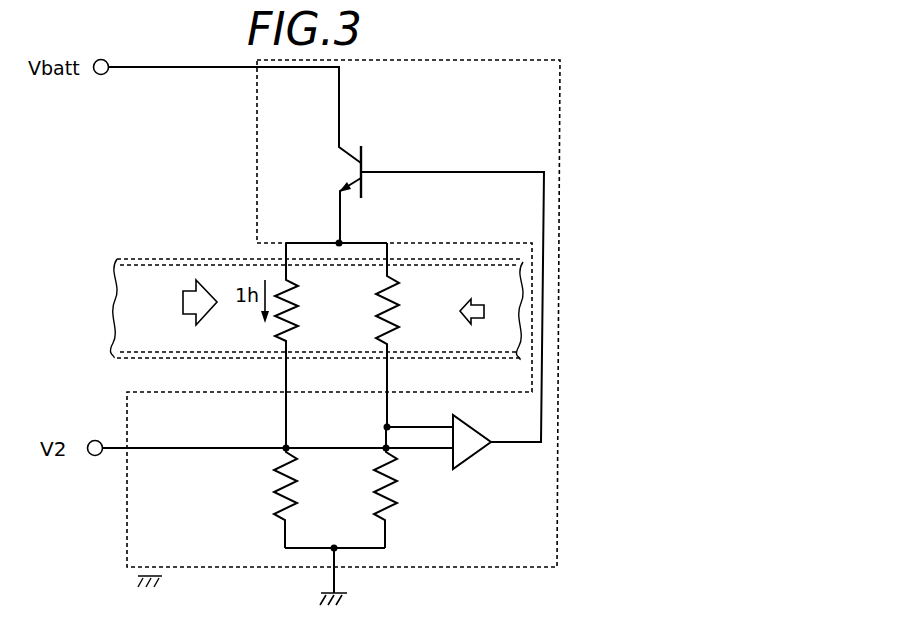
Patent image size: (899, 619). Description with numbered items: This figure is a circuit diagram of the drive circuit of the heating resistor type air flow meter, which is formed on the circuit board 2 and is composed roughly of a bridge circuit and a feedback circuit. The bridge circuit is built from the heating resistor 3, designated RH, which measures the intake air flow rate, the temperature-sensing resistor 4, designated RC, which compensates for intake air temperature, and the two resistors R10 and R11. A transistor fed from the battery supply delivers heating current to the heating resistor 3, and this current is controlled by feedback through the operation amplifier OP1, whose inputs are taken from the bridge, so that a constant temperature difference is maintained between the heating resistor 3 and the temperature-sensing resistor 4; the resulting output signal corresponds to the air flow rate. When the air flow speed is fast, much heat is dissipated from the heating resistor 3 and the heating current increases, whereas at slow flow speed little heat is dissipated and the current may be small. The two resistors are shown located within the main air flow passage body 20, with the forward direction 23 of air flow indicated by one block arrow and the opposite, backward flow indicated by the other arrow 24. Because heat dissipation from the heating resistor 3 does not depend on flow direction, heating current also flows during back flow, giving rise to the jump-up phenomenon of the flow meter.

The circuit board 2 is at (557, 478).
The heating resistor 3 is at (316, 345).
The temperature-sensing resistor 4 is at (416, 335).
The main air flow passage body 20 is at (119, 258).
The forward direction of air flow 23 is at (183, 313).
The reverse air flow direction arrow 24 is at (482, 303).
The resistor R10 is at (313, 498).
The resistor R11 is at (413, 487).
The operation amplifier OP1 is at (470, 458).